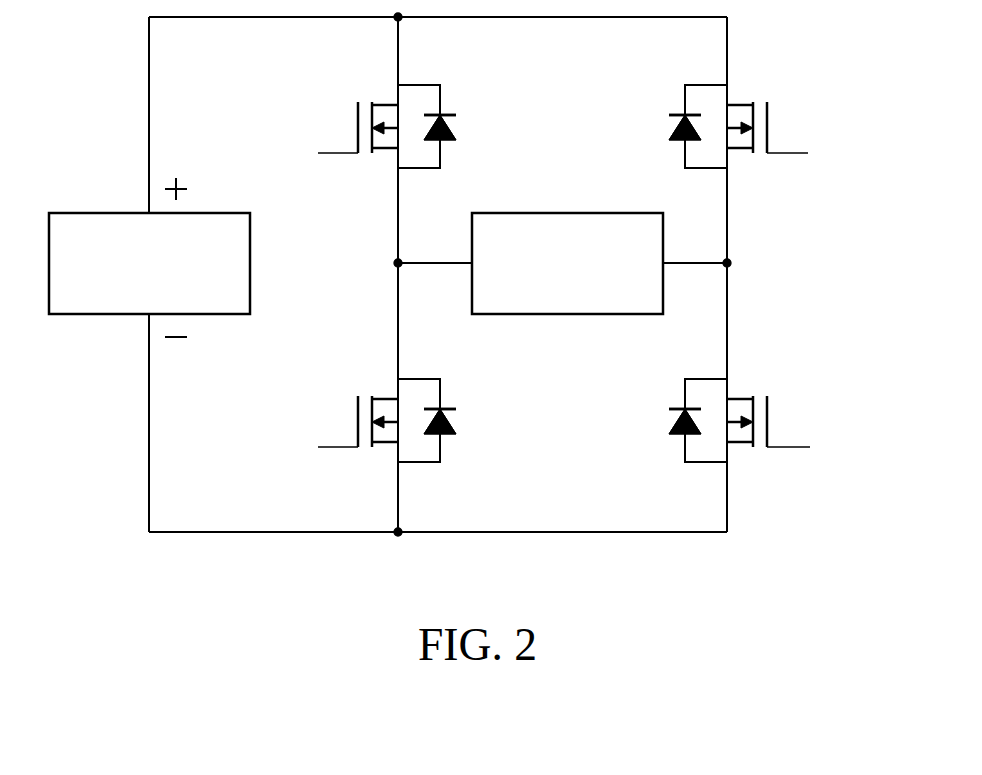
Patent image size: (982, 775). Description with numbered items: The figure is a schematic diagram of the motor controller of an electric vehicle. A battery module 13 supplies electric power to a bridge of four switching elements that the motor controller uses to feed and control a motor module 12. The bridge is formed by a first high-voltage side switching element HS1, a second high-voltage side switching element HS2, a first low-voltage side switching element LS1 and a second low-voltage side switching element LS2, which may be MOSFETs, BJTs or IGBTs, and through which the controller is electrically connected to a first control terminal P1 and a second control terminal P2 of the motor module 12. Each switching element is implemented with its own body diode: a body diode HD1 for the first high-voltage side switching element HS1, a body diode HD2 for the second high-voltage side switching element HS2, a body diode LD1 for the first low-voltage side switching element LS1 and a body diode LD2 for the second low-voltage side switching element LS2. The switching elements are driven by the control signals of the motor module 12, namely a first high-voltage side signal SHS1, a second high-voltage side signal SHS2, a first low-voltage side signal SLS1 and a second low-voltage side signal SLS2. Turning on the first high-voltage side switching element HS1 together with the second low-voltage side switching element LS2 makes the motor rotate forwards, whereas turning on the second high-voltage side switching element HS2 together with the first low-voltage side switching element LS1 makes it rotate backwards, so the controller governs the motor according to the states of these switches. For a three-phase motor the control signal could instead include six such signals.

The motor module 12 is at (552, 213).
The battery module 13 is at (79, 213).
The first high-voltage side switching element HS1 is at (369, 100).
The body diode HD1 is at (467, 130).
The first high-voltage side signal SHS1 is at (305, 152).
The first low-voltage side switching element LS1 is at (369, 394).
The body diode LD1 is at (465, 423).
The first low-voltage side signal SLS1 is at (305, 449).
The second high-voltage side switching element HS2 is at (756, 100).
The body diode HD2 is at (661, 129).
The second high-voltage side signal SHS2 is at (817, 154).
The second low-voltage side switching element LS2 is at (756, 394).
The body diode LD2 is at (661, 423).
The second low-voltage side signal SLS2 is at (816, 449).
The first control terminal P1 is at (415, 265).
The second control terminal P2 is at (712, 265).